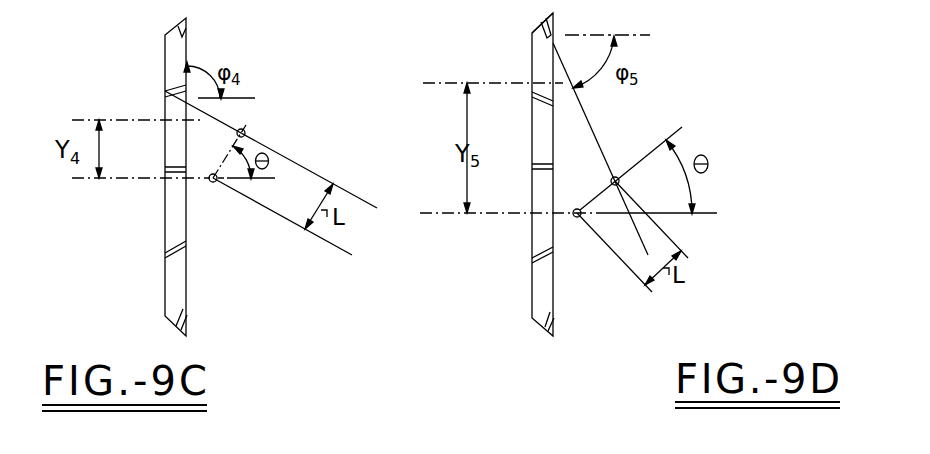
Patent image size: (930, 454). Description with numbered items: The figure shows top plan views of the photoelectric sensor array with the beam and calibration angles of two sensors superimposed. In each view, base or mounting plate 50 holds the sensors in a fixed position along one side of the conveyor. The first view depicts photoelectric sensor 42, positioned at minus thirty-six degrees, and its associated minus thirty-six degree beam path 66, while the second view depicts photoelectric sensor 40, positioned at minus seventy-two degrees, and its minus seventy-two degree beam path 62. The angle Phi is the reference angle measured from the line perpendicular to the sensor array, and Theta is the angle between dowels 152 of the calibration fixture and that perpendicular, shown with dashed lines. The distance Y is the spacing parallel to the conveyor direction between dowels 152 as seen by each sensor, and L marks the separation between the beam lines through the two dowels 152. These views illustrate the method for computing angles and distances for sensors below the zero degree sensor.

In FIG. 9D, the photoelectric sensor 40 is at (533, 34).
In FIG. 9C, the photoelectric sensor 42 is at (165, 93).
In FIG. 9C, the mounting plate 50 is at (165, 222).
In FIG. 9D, the mounting plate 50 is at (532, 275).
In FIG. 9D, the beam path 62 is at (587, 117).
In FIG. 9C, the beam path 66 is at (300, 160).
In FIG. 9C, the dowels 152 is at (253, 113).
In FIG. 9D, the dowels 152 is at (615, 177).